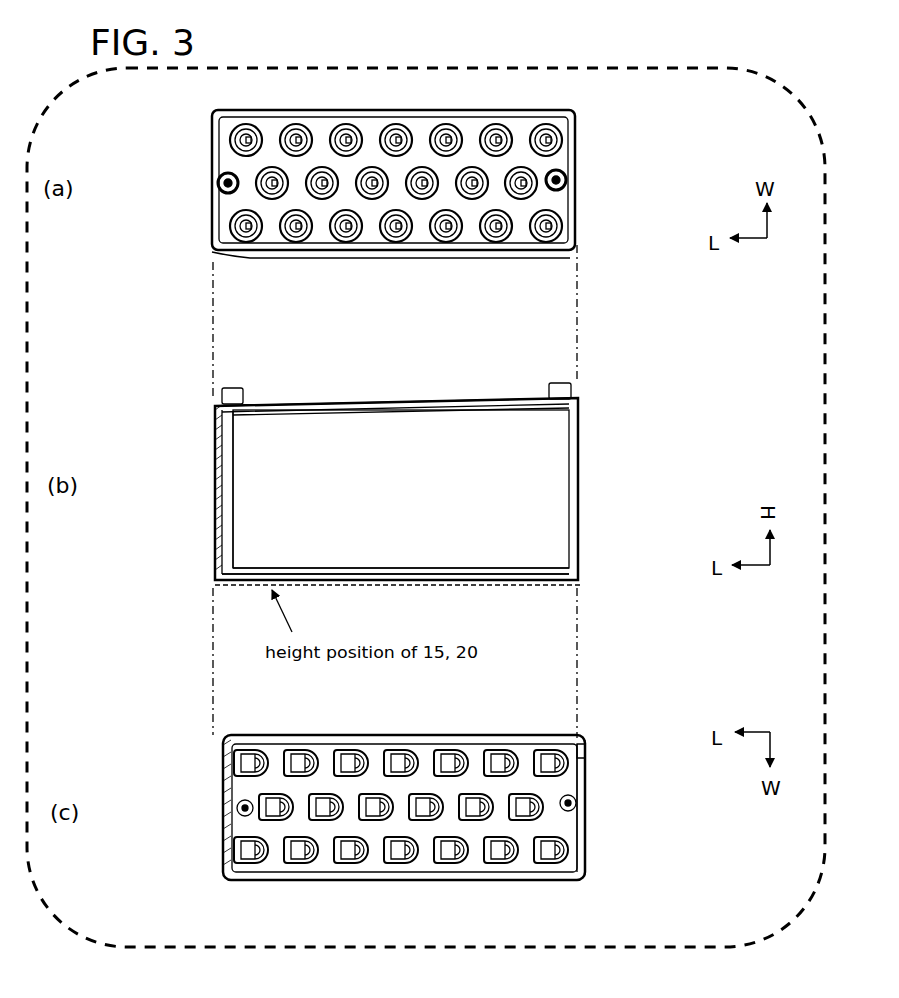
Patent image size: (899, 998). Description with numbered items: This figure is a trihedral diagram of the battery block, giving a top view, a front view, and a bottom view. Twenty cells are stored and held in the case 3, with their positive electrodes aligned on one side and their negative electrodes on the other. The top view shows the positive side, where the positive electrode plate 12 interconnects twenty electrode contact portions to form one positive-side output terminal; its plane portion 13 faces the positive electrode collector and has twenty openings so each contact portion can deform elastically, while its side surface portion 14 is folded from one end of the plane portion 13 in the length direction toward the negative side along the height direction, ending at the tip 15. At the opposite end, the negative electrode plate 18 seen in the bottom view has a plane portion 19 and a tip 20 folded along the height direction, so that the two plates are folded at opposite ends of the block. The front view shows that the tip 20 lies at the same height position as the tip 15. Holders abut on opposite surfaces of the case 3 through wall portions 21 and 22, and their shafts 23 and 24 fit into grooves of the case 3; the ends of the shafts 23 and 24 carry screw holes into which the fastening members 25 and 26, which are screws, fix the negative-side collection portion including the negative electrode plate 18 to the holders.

The case 3 is at (553, 478).
The positive electrode plate 12 is at (146, 225).
The plane portion 13 is at (244, 264).
The side surface portion 14 is at (212, 230).
The tip 15 is at (215, 580).
The negative electrode plate 18 is at (576, 633).
The plane portion 19 is at (518, 586).
The tip 20 is at (576, 584).
The wall portion 21 is at (568, 180).
The wall portion 22 is at (218, 183).
The shaft 23 is at (560, 382).
The shaft 24 is at (228, 388).
The fastening member 25 is at (577, 802).
The fastening member 26 is at (236, 806).